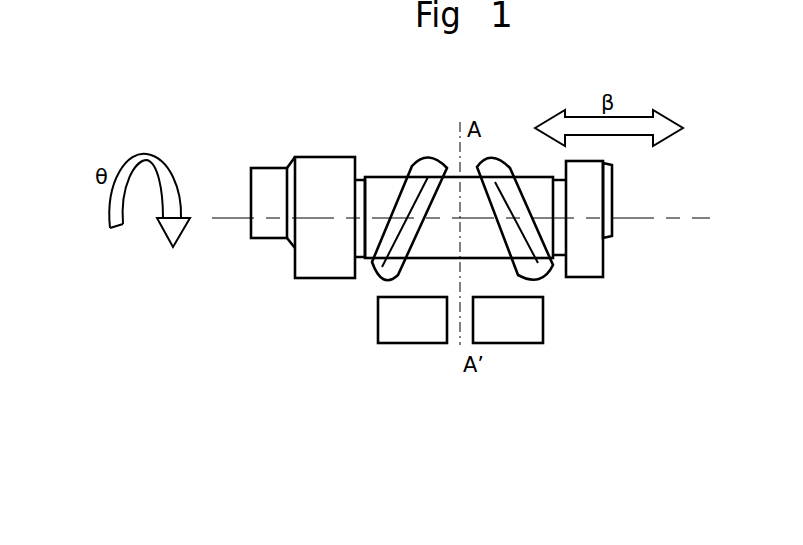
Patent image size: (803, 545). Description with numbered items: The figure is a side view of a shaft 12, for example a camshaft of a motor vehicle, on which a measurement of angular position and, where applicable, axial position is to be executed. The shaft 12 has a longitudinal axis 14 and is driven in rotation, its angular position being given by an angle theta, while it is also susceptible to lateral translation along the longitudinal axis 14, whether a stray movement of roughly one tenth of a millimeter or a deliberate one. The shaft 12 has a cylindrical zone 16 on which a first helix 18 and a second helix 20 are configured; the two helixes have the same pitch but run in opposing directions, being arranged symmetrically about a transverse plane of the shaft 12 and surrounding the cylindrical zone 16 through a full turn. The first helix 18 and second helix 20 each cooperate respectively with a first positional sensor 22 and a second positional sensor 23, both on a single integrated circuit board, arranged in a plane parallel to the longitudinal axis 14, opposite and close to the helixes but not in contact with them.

The shaft 12 is at (328, 262).
The longitudinal axis 14 is at (673, 218).
The cylindrical zone 16 is at (472, 240).
The first helix 18 is at (430, 157).
The second helix 20 is at (497, 157).
The first positional sensor 22 is at (405, 330).
The second positional sensor 23 is at (520, 330).